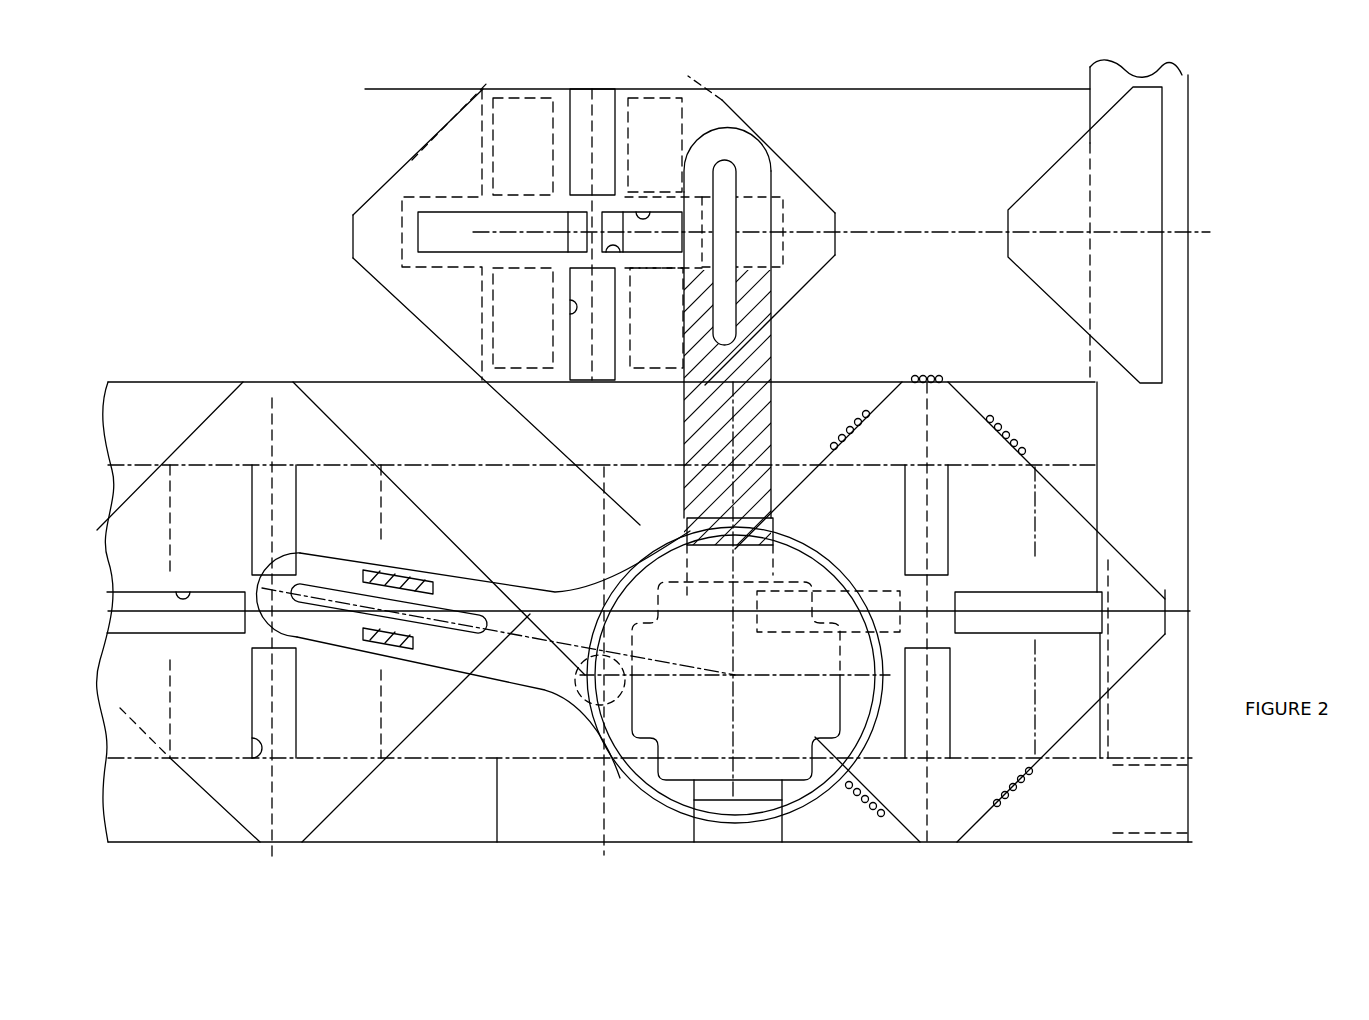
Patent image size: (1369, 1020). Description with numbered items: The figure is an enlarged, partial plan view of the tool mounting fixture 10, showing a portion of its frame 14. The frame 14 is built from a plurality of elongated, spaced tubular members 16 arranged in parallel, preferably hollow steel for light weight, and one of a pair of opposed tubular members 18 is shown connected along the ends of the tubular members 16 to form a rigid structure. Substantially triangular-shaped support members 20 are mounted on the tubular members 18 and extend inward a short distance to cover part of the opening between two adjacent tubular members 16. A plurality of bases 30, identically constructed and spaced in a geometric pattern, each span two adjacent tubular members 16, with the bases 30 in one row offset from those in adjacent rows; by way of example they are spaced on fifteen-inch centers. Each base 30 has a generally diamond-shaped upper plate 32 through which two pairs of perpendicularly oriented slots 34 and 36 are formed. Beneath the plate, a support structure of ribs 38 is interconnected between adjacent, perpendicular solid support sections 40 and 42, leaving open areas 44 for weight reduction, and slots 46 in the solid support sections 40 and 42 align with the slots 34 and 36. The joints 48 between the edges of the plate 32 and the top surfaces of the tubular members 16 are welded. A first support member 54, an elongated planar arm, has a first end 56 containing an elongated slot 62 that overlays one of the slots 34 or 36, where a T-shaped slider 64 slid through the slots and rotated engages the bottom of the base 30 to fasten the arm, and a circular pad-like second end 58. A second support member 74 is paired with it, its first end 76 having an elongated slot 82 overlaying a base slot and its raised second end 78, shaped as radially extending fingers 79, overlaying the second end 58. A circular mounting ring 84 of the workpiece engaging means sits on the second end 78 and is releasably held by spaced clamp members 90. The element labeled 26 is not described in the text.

The tool mounting fixture 10 is at (1193, 303).
The frame 14 is at (1160, 438).
The tubular members 16 is at (957, 208).
The opposed tubular members 18 is at (1168, 528).
The support members 20 is at (1132, 150).
The guide block 26 is at (250, 503).
The bases 30 is at (434, 182).
The upper plate 32 is at (452, 138).
The slots 34 is at (645, 212).
The slots 36 is at (570, 127).
The ribs 38 is at (482, 123).
The solid support section 40 is at (402, 255).
The solid support section 42 is at (620, 95).
The open areas 44 is at (525, 97).
The slots 46 is at (573, 212).
The joints 48 is at (912, 380).
The first support member 54 is at (510, 677).
The first end 56 is at (295, 585).
The second end 58 is at (663, 803).
The elongated slot 62 is at (337, 593).
The slider 64 is at (410, 593).
The second support member 74 is at (750, 300).
The first end 76 is at (745, 165).
The second end 78 is at (823, 685).
The radially extending fingers 79 is at (860, 660).
The elongated slot 82 is at (737, 193).
The mounting ring 84 is at (757, 817).
The clamp members 90 is at (690, 525).